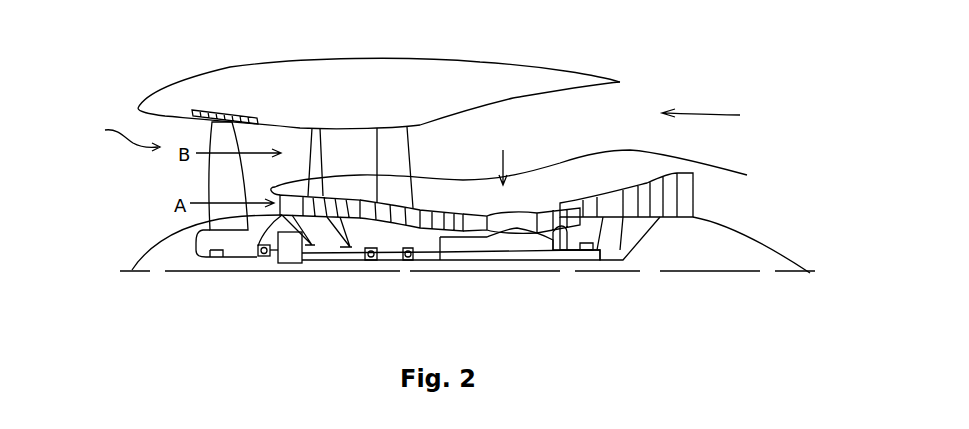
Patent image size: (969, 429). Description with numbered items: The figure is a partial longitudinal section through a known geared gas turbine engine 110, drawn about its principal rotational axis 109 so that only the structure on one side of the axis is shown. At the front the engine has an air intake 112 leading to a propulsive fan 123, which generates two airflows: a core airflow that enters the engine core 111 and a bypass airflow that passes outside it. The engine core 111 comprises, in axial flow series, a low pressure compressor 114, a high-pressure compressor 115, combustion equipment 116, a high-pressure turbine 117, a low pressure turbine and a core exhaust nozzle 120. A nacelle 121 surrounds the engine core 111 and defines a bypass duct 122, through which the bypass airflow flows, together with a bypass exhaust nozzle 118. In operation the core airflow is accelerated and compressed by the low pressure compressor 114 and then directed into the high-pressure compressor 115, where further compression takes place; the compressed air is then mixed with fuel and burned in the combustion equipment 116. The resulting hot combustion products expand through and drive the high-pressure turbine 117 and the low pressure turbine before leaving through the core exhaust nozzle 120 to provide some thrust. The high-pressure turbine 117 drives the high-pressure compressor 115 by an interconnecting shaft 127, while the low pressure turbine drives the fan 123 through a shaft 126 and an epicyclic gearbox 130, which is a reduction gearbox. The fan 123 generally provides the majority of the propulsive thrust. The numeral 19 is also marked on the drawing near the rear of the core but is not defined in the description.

The geared gas turbine engine 110 is at (197, 77).
The nacelle 121 is at (396, 76).
The air intake 112 is at (107, 137).
The propulsive fan 123 is at (212, 181).
The low pressure compressor 114 is at (346, 195).
The high-pressure compressor 115 is at (452, 210).
The engine core 111 is at (518, 156).
The bypass duct 122 is at (598, 124).
The combustion equipment 116 is at (523, 223).
The high-pressure turbine 117 is at (567, 197).
The shaft 126 is at (455, 262).
The interconnecting shaft 127 is at (473, 262).
The epicyclic gearbox 130 is at (297, 262).
The exhaust nozzle 19 is at (672, 187).
The core exhaust nozzle 120 is at (723, 203).
The bypass exhaust nozzle 118 is at (719, 115).
The principal rotational axis 109 is at (667, 272).